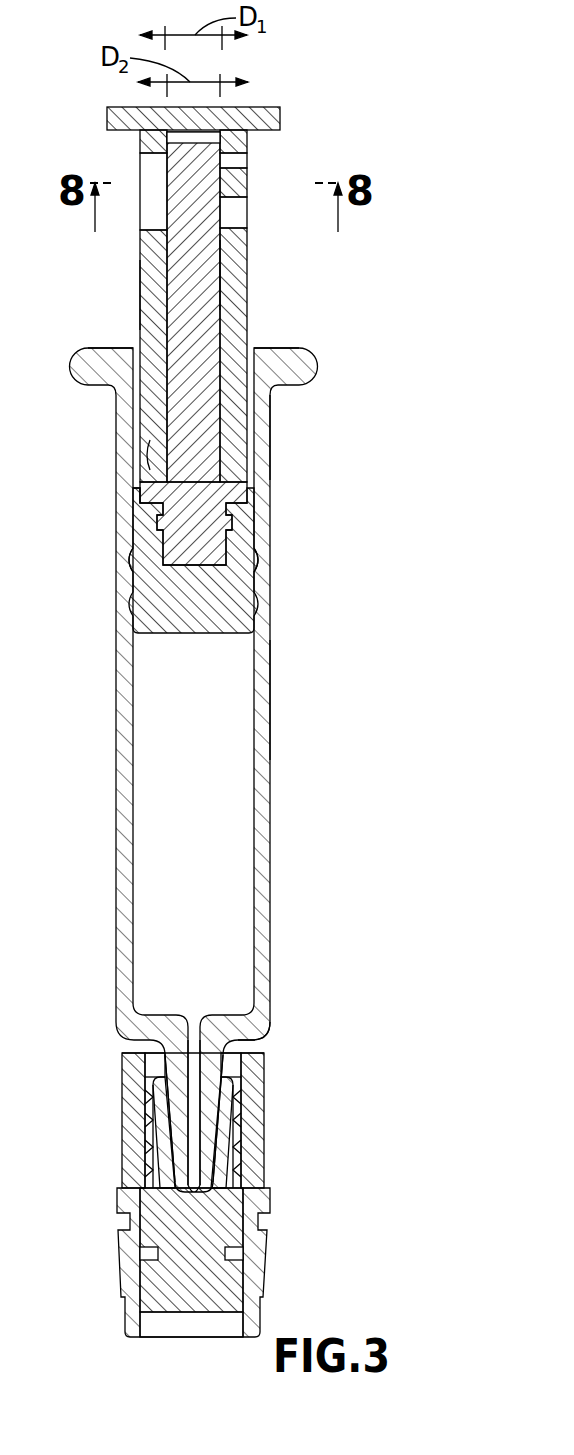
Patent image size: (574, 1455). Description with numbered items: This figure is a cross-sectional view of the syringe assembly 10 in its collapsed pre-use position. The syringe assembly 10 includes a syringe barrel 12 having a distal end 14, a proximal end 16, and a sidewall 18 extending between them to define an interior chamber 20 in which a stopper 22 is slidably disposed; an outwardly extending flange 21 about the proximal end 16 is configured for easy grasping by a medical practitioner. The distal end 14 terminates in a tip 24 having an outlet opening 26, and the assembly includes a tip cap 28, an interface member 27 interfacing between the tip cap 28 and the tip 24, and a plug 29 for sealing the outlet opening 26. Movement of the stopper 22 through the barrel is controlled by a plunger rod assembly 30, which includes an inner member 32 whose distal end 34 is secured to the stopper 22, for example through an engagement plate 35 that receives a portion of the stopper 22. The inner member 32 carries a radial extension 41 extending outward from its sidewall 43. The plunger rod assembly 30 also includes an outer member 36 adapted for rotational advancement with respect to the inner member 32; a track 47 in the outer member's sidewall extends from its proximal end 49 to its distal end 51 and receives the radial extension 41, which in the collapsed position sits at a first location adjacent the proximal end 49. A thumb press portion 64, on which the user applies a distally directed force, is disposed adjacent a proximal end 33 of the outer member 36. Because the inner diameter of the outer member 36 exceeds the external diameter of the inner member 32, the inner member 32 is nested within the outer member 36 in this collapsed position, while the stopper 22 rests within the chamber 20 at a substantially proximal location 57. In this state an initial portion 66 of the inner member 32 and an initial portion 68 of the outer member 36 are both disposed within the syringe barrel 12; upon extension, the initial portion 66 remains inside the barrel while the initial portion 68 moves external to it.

The syringe assembly 10 is at (375, 232).
The syringe barrel 12 is at (270, 831).
The distal end 14 is at (268, 1043).
The proximal end 16 is at (271, 414).
The sidewall 18 is at (271, 684).
The interior chamber 20 is at (214, 852).
The flange 21 is at (300, 366).
The stopper 22 is at (232, 582).
The tip 24 is at (214, 1068).
The outlet opening 26 is at (196, 1176).
The interface member 27 is at (255, 1265).
The tip cap 28 is at (258, 1131).
The plug 29 is at (190, 1302).
The plunger rod assembly 30 is at (234, 322).
The inner member 32 is at (198, 218).
The proximal end of the outer member 33 is at (240, 134).
The distal end of the inner member 34 is at (236, 488).
The engagement plate 35 is at (140, 486).
The outer member 36 is at (148, 293).
The radial extension 41 is at (244, 190).
The sidewall of the inner member 43 is at (222, 276).
The track 47 is at (238, 161).
The proximal end of the outer member 49 is at (140, 157).
The distal end of the outer member 51 is at (150, 446).
The proximal location 57 is at (140, 549).
The thumb press portion 64 is at (257, 118).
The initial portion of the inner member 66 is at (192, 468).
The initial portion of the outer member 68 is at (236, 438).